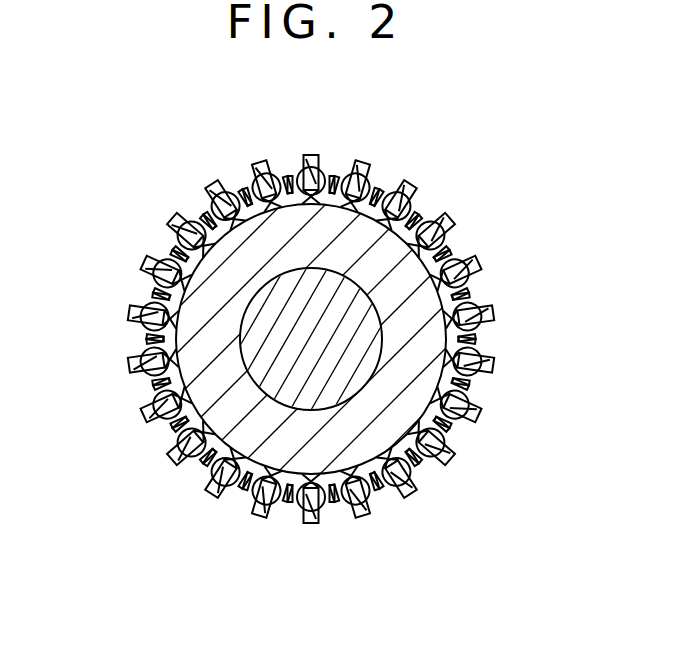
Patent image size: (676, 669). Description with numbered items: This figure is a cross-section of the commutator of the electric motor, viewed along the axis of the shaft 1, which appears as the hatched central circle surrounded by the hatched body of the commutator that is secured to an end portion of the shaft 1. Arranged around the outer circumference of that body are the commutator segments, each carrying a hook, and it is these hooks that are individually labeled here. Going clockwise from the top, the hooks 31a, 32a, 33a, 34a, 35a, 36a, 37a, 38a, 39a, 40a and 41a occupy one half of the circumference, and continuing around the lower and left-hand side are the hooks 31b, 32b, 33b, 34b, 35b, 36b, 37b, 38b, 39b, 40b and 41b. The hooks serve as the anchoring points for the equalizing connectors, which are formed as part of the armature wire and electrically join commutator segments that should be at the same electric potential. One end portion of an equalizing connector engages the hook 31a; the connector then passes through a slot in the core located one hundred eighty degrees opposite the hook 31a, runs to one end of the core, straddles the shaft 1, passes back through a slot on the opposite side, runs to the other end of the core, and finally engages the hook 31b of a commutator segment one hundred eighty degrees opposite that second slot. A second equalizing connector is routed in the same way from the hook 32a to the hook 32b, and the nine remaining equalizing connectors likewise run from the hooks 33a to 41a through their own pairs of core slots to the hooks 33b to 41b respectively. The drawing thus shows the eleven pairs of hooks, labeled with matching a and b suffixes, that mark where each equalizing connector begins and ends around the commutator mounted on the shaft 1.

The shaft 1 is at (302, 375).
The hook 31a is at (312, 149).
The hook 32a is at (359, 162).
The hook 33a is at (407, 189).
The hook 34a is at (453, 221).
The hook 35a is at (484, 267).
The hook 36a is at (504, 315).
The hook 37a is at (504, 361).
The hook 38a is at (489, 409).
The hook 39a is at (458, 450).
The hook 40a is at (418, 493).
The hook 41a is at (365, 521).
The hook 31b is at (312, 534).
The hook 32b is at (257, 523).
The hook 33b is at (210, 494).
The hook 34b is at (164, 461).
The hook 35b is at (133, 415).
The hook 36b is at (119, 367).
The hook 37b is at (113, 316).
The hook 38b is at (133, 272).
The hook 39b is at (163, 227).
The hook 40b is at (209, 190).
The hook 41b is at (256, 161).